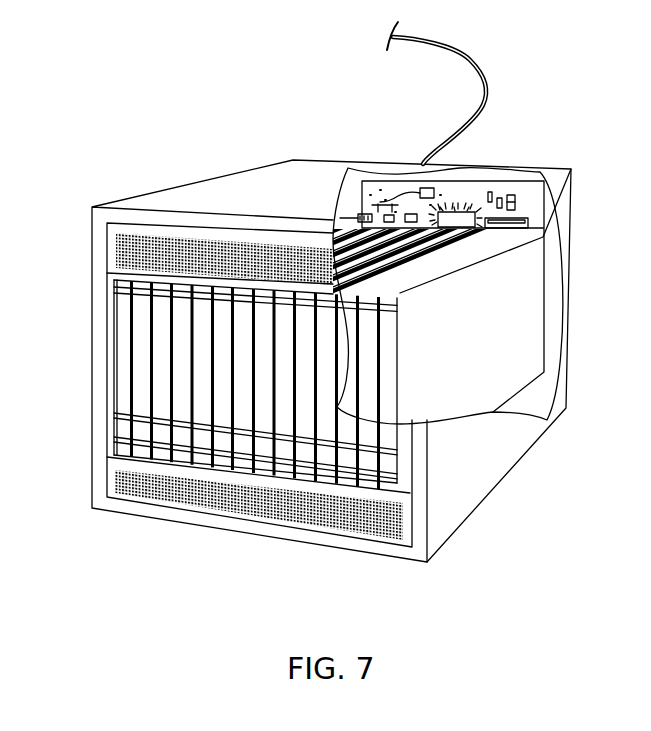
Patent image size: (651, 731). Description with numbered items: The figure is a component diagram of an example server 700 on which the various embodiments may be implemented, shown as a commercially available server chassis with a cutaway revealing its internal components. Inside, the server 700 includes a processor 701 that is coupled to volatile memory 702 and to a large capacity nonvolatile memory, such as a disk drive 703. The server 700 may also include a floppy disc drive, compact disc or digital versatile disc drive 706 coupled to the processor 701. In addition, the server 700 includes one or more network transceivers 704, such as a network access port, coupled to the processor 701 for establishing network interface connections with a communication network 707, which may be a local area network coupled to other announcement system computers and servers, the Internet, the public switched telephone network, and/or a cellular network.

The server 700 is at (238, 173).
The processor 701 is at (458, 220).
The volatile memory 702 is at (525, 220).
The disk drive 703 is at (160, 332).
The network transceiver 704 is at (360, 216).
The compact disc or digital versatile disc drive 706 is at (140, 360).
The communication network 707 is at (488, 81).